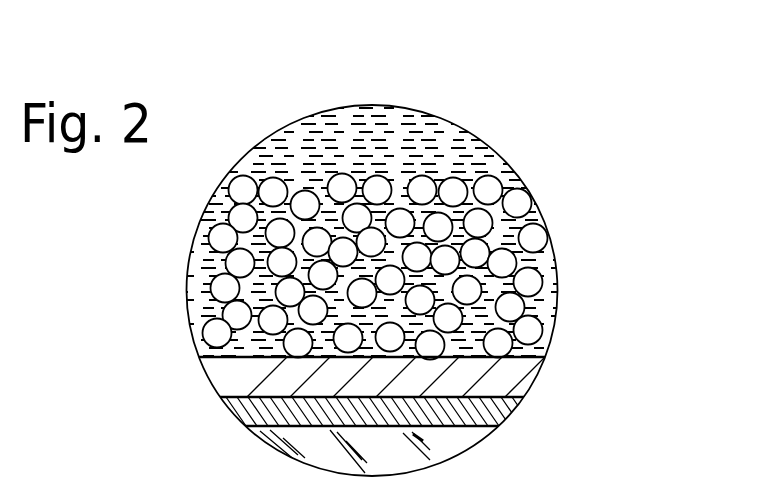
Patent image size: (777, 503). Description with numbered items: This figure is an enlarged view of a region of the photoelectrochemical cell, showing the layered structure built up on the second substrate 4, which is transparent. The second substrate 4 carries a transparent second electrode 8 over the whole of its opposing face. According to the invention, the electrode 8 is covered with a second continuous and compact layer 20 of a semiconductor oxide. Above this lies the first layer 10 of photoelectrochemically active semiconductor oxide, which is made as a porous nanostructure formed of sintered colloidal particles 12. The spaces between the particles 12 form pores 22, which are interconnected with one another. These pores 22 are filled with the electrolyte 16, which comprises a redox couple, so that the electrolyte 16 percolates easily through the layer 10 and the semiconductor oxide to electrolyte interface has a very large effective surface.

The first layer 10 is at (572, 360).
The electrolyte 16 is at (342, 133).
The sintered colloidal particles 12 is at (225, 235).
The pores 22 is at (302, 267).
The second continuous and compact layer 20 is at (483, 382).
The second electrode 8 is at (260, 408).
The second substrate 4 is at (313, 441).